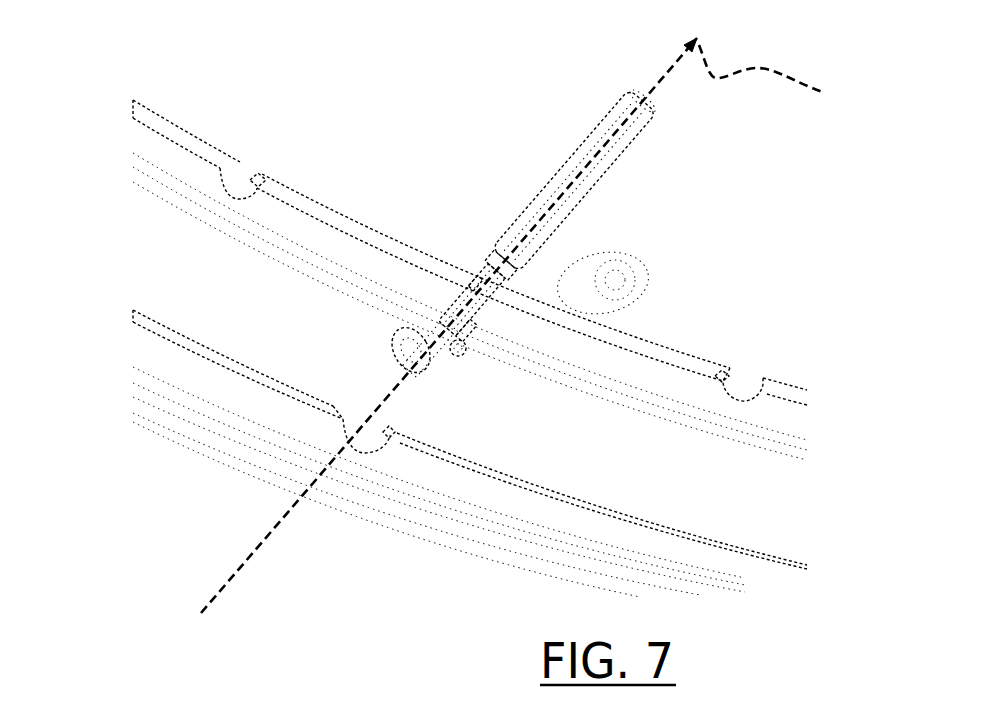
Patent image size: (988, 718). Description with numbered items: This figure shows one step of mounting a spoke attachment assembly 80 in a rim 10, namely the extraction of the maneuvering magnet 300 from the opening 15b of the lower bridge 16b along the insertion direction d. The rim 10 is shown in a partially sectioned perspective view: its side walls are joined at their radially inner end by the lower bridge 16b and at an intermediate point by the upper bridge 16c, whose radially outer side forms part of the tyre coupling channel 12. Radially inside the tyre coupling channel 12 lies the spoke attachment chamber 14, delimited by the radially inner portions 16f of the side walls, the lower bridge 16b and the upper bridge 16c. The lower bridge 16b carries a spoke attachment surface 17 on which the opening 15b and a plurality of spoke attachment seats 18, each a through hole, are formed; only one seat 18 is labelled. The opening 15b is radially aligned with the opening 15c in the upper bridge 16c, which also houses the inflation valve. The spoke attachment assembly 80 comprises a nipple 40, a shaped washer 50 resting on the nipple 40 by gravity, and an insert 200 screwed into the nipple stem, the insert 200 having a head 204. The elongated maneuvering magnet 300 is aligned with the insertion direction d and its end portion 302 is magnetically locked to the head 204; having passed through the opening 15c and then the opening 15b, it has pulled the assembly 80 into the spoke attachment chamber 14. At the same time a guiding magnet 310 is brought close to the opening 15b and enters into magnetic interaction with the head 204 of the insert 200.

The rim 10 is at (230, 500).
The tyre coupling channel 12 is at (123, 362).
The spoke attachment chamber 14 is at (170, 283).
The opening 15b is at (468, 273).
The opening 15c is at (350, 427).
The lower bridge 16b is at (688, 340).
The upper bridge 16c is at (593, 537).
The radially inner portions of the side walls 16f is at (667, 482).
The spoke attachment surface 17 is at (277, 240).
The spoke attachment seat 18 is at (240, 165).
The nipple 40 is at (470, 333).
The shaped washer 50 is at (460, 352).
The spoke attachment assembly 80 is at (392, 348).
The insert 200 is at (455, 302).
The head 204 is at (478, 273).
The maneuvering magnet 300 is at (537, 192).
The end portion 302 is at (495, 263).
The guiding magnet 310 is at (660, 270).
The insertion direction d is at (535, 325).